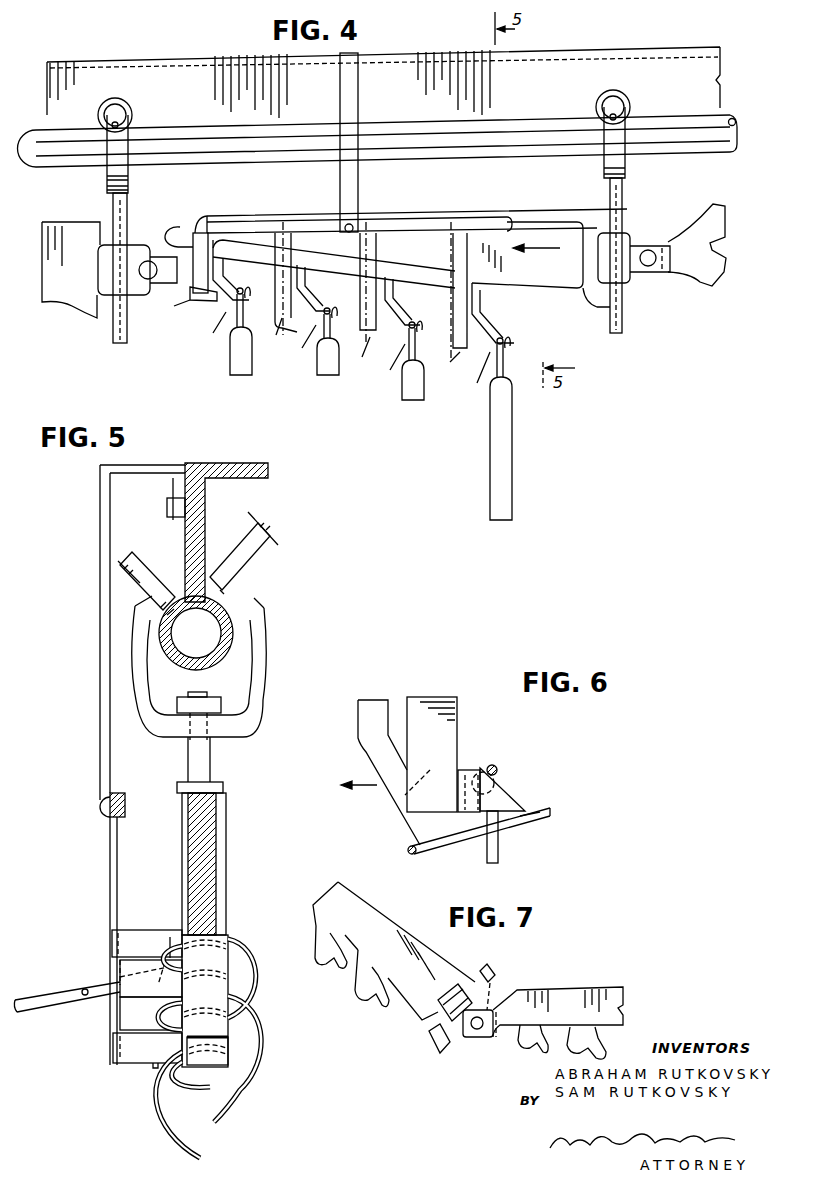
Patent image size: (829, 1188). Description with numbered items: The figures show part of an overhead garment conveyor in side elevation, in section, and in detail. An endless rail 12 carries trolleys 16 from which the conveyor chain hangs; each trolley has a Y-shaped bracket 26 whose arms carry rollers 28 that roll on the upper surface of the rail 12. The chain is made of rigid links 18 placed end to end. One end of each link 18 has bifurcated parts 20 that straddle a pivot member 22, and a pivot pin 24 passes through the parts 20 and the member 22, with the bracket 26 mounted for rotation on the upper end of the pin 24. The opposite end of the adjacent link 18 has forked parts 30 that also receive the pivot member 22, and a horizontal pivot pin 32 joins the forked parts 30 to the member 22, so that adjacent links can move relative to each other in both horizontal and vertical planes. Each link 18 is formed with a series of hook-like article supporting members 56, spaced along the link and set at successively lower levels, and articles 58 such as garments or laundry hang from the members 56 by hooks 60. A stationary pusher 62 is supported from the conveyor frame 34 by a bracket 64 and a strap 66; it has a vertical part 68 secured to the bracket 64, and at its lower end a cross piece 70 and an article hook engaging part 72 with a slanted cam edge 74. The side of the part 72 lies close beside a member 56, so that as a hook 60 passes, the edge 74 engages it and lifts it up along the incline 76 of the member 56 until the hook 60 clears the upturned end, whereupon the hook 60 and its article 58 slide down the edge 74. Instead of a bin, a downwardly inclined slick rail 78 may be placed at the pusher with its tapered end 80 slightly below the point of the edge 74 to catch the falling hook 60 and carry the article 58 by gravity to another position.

In FIG. 4, the endless rail 12 is at (68, 160).
In FIG. 5, the endless rail 12 is at (236, 630).
In FIG. 4, the trolley 16 is at (135, 140).
In FIG. 5, the trolley 16 is at (268, 648).
In FIG. 4, the rigid link 18 is at (76, 300).
In FIG. 5, the rigid link 18 is at (227, 813).
In FIG. 7, the rigid link 18 is at (378, 907).
In FIG. 7, the bifurcated parts 20 is at (496, 981).
In FIG. 4, the pivot member 22 is at (128, 250).
In FIG. 7, the pivot member 22 is at (459, 1034).
In FIG. 4, the pivot pin 24 is at (127, 208).
In FIG. 7, the pivot pin 24 is at (432, 1046).
In FIG. 4, the Y-shaped bracket 26 is at (108, 184).
In FIG. 5, the Y-shaped bracket 26 is at (262, 690).
In FIG. 4, the rollers 28 is at (130, 112).
In FIG. 5, the rollers 28 is at (130, 557).
In FIG. 7, the forked parts 30 is at (492, 1038).
In FIG. 4, the horizontal pivot pin 32 is at (651, 251).
In FIG. 7, the horizontal pivot pin 32 is at (476, 1032).
In FIG. 4, the frame 34 is at (186, 70).
In FIG. 5, the frame 34 is at (205, 522).
In FIG. 4, the article supporting member 56 is at (247, 304).
In FIG. 5, the article supporting member 56 is at (220, 962).
In FIG. 6, the article supporting member 56 is at (410, 820).
In FIG. 7, the article supporting member 56 is at (355, 992).
In FIG. 4, the article 58 is at (232, 360).
In FIG. 4, the hook 60 is at (241, 288).
In FIG. 5, the hook 60 is at (250, 960).
In FIG. 6, the hook 60 is at (498, 769).
In FIG. 4, the stationary pusher 62 is at (204, 297).
In FIG. 6, the stationary pusher 62 is at (458, 728).
In FIG. 4, the bracket 64 is at (426, 220).
In FIG. 5, the bracket 64 is at (125, 800).
In FIG. 4, the strap 66 is at (358, 185).
In FIG. 5, the strap 66 is at (104, 687).
In FIG. 4, the vertical part 68 is at (172, 232).
In FIG. 5, the vertical part 68 is at (110, 908).
In FIG. 5, the cross piece 70 is at (135, 928).
In FIG. 5, the article hook engaging part 72 is at (113, 958).
In FIG. 6, the article hook engaging part 72 is at (468, 770).
In FIG. 5, the slanted cam edge 74 is at (170, 938).
In FIG. 6, the slanted cam edge 74 is at (520, 800).
In FIG. 6, the incline 76 is at (490, 772).
In FIG. 5, the slick rail 78 is at (42, 1008).
In FIG. 6, the slick rail 78 is at (406, 850).
In FIG. 6, the tapered end 80 is at (533, 820).